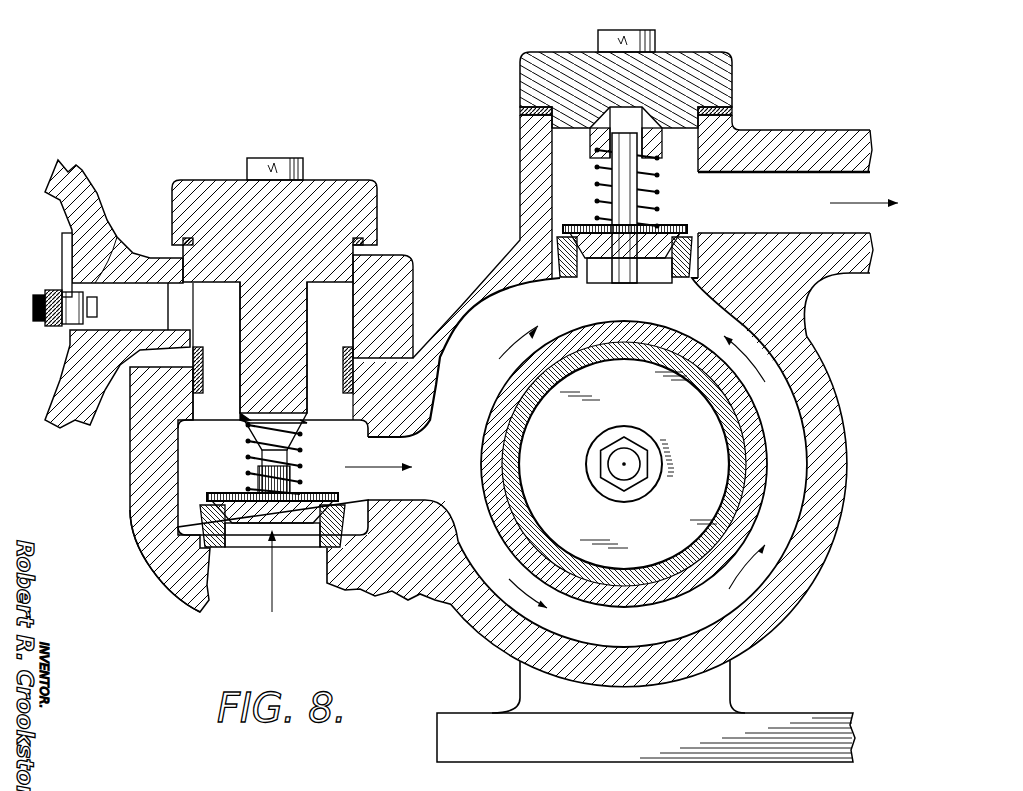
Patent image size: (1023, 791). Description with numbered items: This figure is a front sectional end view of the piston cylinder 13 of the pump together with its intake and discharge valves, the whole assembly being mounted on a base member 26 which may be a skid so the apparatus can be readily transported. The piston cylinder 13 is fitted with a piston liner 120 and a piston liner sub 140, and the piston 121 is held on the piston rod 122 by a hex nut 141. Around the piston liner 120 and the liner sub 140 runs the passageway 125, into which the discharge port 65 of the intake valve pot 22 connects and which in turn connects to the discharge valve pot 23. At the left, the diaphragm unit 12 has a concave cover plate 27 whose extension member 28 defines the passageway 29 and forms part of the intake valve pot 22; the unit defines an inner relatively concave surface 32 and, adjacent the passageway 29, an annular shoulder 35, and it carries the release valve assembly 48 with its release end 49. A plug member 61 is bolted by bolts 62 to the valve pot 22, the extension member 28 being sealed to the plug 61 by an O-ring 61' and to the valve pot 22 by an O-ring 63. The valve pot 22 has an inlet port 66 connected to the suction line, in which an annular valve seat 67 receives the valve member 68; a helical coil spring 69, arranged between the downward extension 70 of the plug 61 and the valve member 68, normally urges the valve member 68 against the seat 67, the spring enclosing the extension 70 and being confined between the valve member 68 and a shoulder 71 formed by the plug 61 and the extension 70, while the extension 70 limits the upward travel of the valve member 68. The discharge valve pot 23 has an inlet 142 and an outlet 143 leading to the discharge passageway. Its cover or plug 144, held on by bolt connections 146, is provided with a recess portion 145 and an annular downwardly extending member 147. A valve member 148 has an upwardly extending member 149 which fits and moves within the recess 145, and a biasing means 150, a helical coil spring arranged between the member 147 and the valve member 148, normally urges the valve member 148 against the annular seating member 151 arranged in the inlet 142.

The diaphragm unit 12 is at (123, 270).
The piston cylinder 13 is at (838, 348).
The intake valve pot 22 is at (150, 460).
The discharge valve pot 23 is at (535, 145).
The base member 26 is at (812, 730).
The cover plate 27 is at (150, 233).
The extension member 28 is at (398, 268).
The passageway 29 is at (150, 317).
The inner relatively concave surface 32 is at (60, 223).
The annular shoulder 35 is at (68, 366).
The release valve assembly 48 is at (40, 293).
The release end 49 is at (127, 256).
The plug member 61 is at (280, 296).
The O-ring 61' is at (300, 220).
The bolts 62 is at (290, 158).
The O-ring 63 is at (208, 365).
The outlet port 65 is at (393, 452).
The inlet port 66 is at (260, 536).
The annular valve seat 67 is at (210, 528).
The valve member 68 is at (170, 588).
The helical coil spring 69 is at (245, 478).
The downward extension 70 is at (262, 446).
The shoulder 71 is at (243, 428).
The piston liner 120 is at (728, 416).
The piston 121 is at (708, 457).
The piston rod 122 is at (618, 470).
The passageway 125 is at (505, 588).
The piston liner sub 140 is at (760, 490).
The hex nut 141 is at (628, 460).
The inlet 142 is at (598, 270).
The outlet 143 is at (780, 210).
The cover or plug 144 is at (543, 62).
The recess portion 145 is at (628, 122).
The bolt connections 146 is at (627, 46).
The annular downwardly extending member 147 is at (590, 155).
The valve member 148 is at (566, 229).
The upwardly extending member 149 is at (629, 183).
The biasing means 150 is at (597, 195).
The annular seating member 151 is at (558, 258).